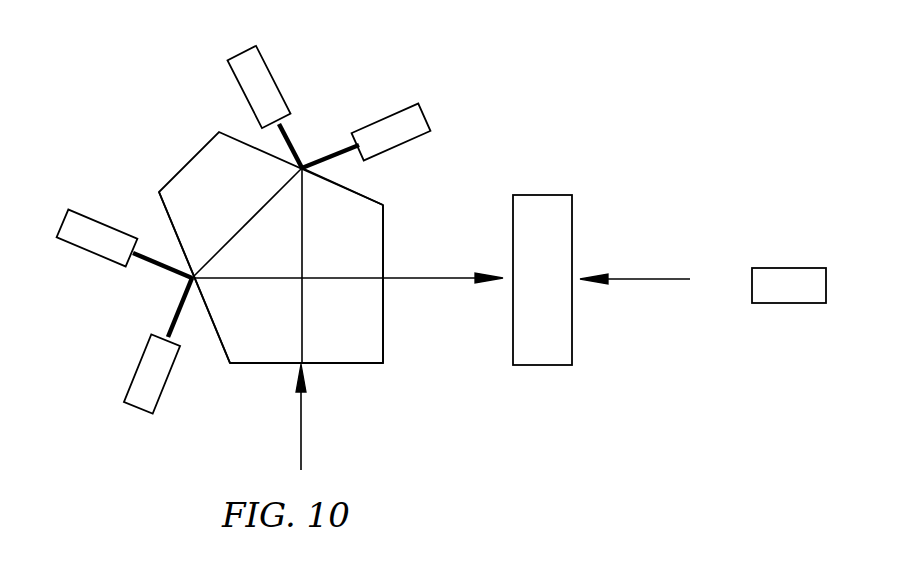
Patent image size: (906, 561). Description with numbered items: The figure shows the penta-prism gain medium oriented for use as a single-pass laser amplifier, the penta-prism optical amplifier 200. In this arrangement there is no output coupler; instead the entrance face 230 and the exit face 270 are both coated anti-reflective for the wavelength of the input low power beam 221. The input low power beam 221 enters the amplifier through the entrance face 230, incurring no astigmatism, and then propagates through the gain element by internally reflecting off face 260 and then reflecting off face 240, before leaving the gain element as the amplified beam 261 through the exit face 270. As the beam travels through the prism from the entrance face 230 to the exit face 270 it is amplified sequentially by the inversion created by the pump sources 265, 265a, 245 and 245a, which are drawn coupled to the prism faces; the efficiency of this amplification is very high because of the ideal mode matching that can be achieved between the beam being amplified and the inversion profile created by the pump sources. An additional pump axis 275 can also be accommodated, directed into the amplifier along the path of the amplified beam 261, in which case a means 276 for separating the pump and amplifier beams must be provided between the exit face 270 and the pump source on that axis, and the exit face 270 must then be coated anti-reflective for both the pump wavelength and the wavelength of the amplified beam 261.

The penta-prism optical amplifier 200 is at (228, 357).
The input low power beam 221 is at (301, 430).
The entrance face 230 is at (370, 363).
The face 240 is at (165, 213).
The pump source 245 is at (135, 373).
The pump source 245a is at (78, 249).
The face 260 is at (375, 198).
The amplified beam 261 is at (430, 278).
The pump source 265 is at (269, 72).
The pump source 265a is at (426, 117).
The exit face 270 is at (385, 232).
The additional pump axis 275 is at (703, 285).
The means for separating the pump and amplifier beams 276 is at (548, 195).